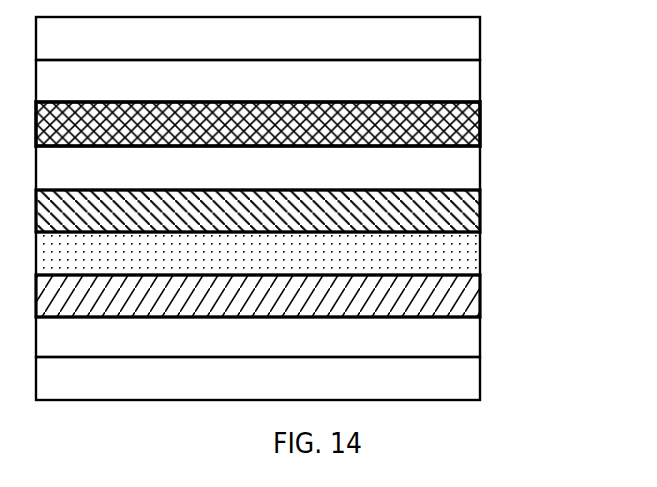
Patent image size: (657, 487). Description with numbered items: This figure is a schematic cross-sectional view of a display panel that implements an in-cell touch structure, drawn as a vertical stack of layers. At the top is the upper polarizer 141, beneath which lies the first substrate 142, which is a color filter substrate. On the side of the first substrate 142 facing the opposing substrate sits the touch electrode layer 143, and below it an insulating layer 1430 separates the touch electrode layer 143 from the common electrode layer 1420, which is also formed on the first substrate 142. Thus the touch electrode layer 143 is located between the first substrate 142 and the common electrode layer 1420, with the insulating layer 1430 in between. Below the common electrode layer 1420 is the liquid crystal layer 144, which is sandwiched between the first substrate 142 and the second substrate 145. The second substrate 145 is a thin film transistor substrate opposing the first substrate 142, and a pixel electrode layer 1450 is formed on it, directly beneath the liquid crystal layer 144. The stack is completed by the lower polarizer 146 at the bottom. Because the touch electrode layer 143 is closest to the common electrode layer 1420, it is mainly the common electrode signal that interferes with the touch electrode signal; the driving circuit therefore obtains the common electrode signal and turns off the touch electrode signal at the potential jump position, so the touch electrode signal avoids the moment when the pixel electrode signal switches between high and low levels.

The upper polarizer 141 is at (460, 33).
The first substrate 142 is at (460, 77).
The touch electrode layer 143 is at (460, 128).
The insulating layer 1430 is at (460, 168).
The common electrode layer 1420 is at (460, 217).
The liquid crystal layer 144 is at (460, 258).
The pixel electrode layer 1450 is at (460, 302).
The second substrate 145 is at (460, 342).
The lower polarizer 146 is at (460, 386).